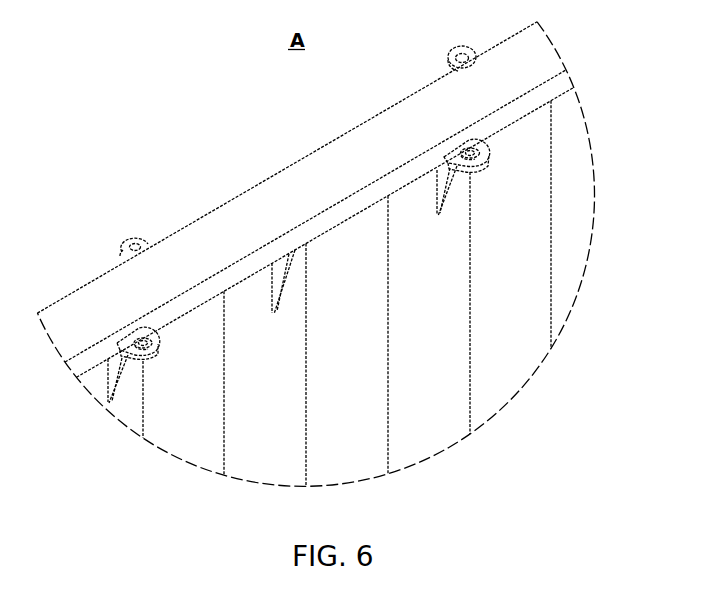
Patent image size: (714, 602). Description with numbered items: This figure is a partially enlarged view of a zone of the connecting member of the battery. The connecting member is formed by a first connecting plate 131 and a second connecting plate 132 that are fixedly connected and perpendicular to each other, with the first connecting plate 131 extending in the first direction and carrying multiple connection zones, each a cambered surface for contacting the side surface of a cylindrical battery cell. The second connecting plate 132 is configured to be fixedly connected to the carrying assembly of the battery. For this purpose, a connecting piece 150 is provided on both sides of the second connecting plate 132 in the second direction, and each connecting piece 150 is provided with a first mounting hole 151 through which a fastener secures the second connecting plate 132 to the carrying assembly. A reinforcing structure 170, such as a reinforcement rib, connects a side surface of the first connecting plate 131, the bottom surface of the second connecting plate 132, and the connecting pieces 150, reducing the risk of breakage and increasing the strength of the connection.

The second connecting plate 132 is at (263, 200).
The first mounting hole 151 is at (135, 247).
The connecting piece 150 is at (466, 155).
The reinforcing structure 170 is at (118, 377).
The first connecting plate 131 is at (282, 385).